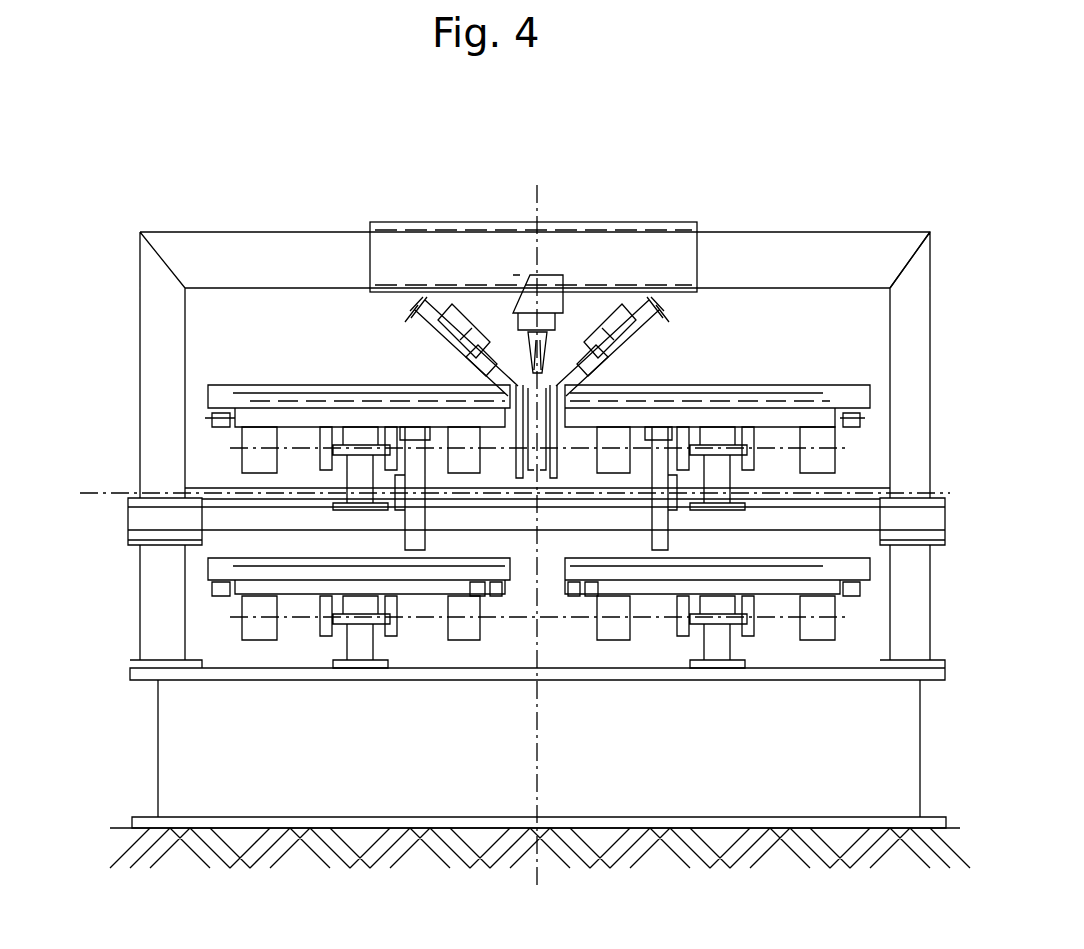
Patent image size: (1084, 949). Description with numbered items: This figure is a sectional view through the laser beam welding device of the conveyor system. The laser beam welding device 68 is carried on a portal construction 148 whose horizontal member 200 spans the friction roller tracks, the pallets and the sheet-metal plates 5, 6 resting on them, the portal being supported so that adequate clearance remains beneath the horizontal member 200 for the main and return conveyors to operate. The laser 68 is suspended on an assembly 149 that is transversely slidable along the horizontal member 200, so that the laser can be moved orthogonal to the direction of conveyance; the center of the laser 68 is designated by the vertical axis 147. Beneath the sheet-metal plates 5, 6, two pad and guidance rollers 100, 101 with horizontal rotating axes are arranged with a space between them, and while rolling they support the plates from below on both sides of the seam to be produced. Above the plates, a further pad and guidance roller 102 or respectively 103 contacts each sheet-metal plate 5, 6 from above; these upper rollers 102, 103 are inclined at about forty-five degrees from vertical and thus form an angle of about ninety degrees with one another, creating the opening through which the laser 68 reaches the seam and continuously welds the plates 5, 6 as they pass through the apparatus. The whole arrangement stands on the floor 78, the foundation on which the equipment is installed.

The horizontal member 200 is at (745, 232).
The portal construction 148 is at (905, 275).
The assembly 149 is at (452, 255).
The laser beam welding device 68 is at (556, 290).
The center of the laser 147 is at (540, 768).
The upper pad and guidance roller 102 is at (450, 328).
The upper pad and guidance roller 103 is at (624, 328).
The pad and guidance roller 100 is at (531, 475).
The pad and guidance roller 101 is at (548, 475).
The sheet-metal plate 5 is at (277, 385).
The sheet-metal plate 6 is at (766, 385).
The floor 78 is at (940, 812).